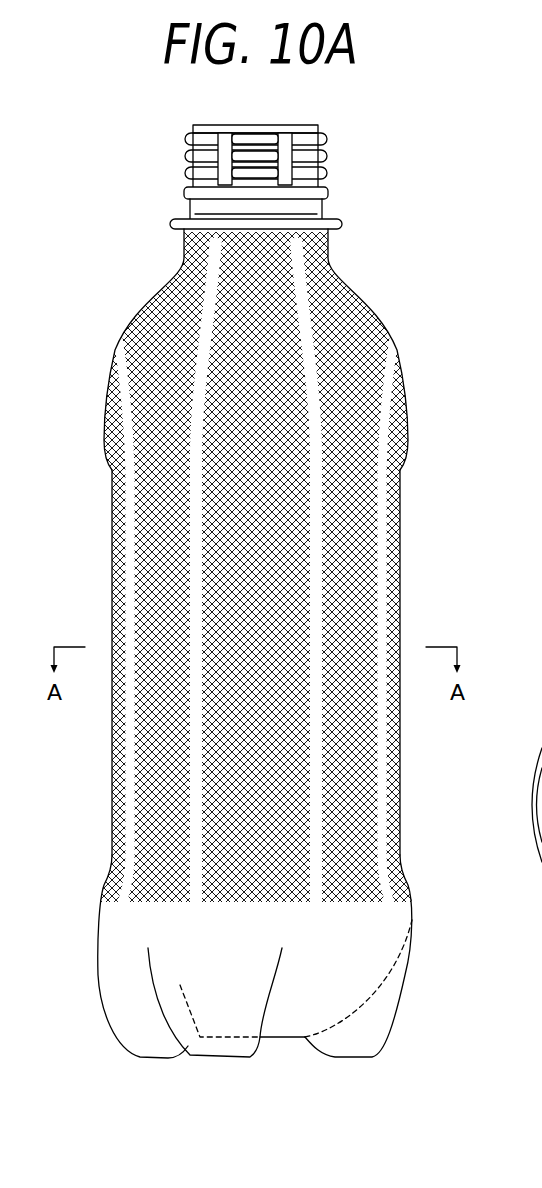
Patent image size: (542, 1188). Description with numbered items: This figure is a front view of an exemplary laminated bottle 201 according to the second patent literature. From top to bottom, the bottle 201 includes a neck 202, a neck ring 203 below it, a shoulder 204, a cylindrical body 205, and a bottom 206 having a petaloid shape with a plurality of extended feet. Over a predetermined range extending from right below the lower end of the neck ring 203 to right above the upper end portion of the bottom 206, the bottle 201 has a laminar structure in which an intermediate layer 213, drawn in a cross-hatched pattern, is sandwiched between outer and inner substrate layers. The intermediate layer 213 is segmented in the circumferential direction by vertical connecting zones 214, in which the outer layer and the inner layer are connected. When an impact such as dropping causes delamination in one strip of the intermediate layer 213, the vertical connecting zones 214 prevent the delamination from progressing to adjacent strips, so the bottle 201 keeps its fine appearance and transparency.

The bottle 201 is at (298, 591).
The neck 202 is at (186, 160).
The neck ring 203 is at (342, 224).
The shoulder 204 is at (393, 330).
The cylindrical body 205 is at (295, 567).
The bottom 206 is at (416, 968).
The intermediate layer 213 is at (350, 553).
The vertical connecting zones 214 is at (312, 513).